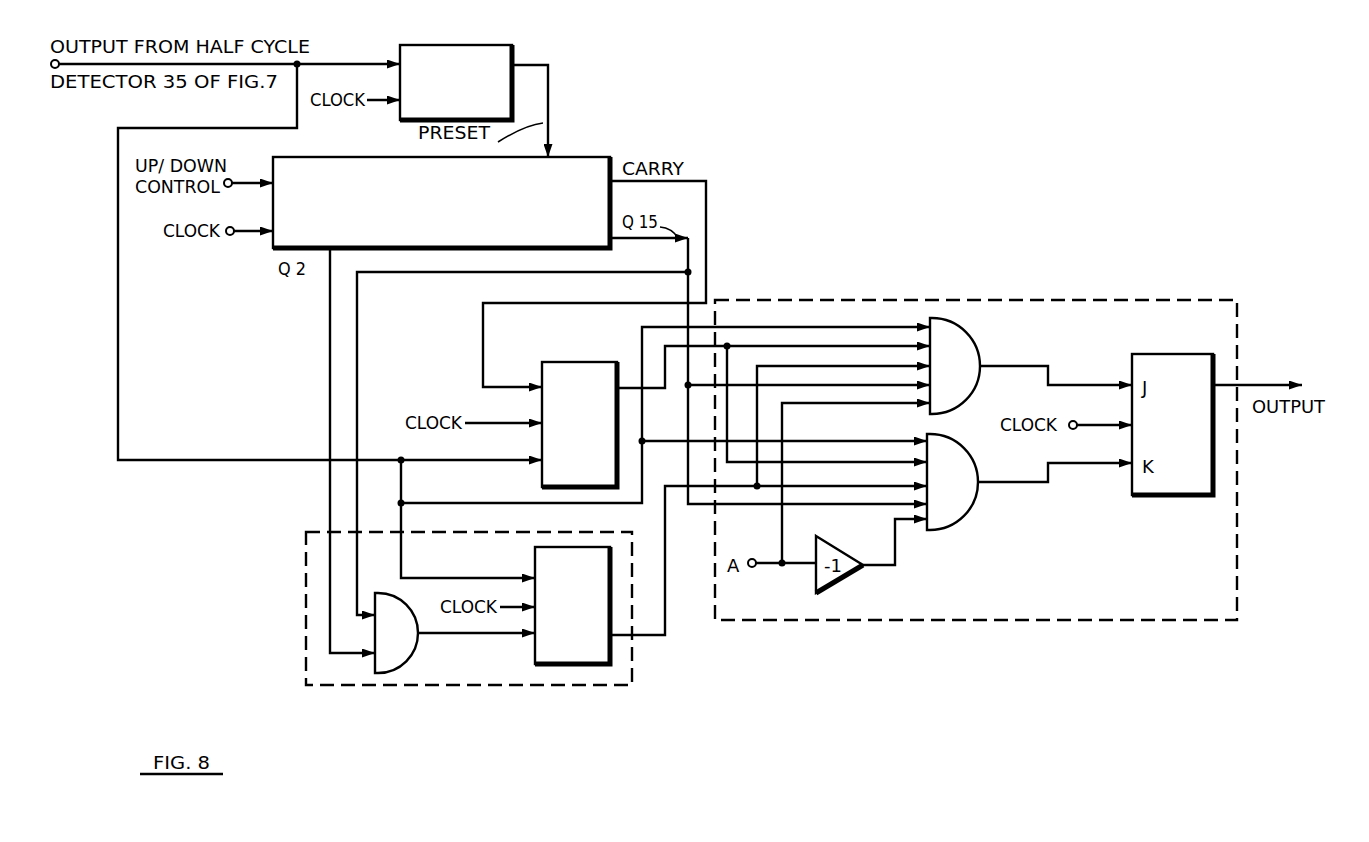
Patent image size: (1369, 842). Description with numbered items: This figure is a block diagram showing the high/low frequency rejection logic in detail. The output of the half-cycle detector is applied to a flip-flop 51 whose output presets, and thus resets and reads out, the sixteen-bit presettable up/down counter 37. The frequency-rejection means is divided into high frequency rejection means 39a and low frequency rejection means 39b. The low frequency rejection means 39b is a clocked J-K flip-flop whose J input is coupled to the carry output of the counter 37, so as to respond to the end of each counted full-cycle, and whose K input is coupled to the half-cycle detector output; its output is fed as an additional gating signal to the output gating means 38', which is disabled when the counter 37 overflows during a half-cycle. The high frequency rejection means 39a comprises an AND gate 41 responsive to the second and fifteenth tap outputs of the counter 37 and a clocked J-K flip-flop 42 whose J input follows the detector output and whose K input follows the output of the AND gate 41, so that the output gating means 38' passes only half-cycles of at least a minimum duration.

The flip-flop 51 is at (462, 62).
The counter 37 is at (581, 180).
The high frequency rejection means 39a is at (318, 612).
The low frequency rejection means 39b is at (572, 392).
The AND gate 41 is at (385, 648).
The clocked J-K type flip-flop 42 is at (577, 560).
The output gating means 38' is at (976, 484).